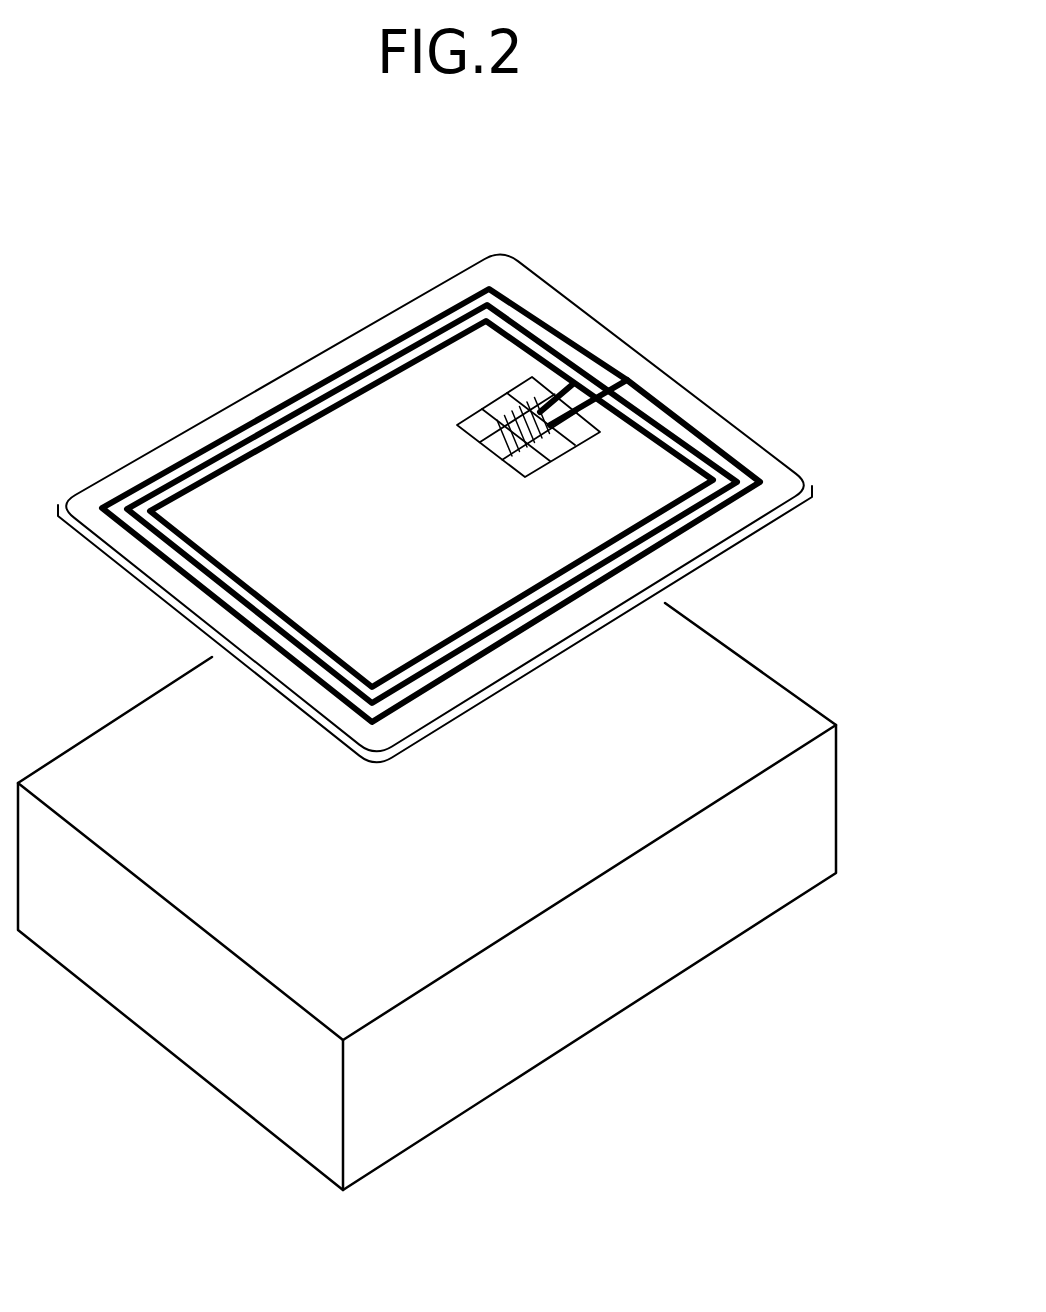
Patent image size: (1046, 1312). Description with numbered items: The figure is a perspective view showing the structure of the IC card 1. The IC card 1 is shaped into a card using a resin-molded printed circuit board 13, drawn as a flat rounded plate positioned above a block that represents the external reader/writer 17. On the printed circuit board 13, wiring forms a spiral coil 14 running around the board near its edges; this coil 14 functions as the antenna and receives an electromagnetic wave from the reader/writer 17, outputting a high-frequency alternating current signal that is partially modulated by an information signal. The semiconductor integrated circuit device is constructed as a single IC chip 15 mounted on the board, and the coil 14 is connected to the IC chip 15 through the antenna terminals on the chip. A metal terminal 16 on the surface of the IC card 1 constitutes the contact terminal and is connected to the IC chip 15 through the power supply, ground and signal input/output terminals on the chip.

The IC card 1 is at (725, 322).
The printed circuit board 13 is at (297, 358).
The spiral coil 14 is at (167, 468).
The IC chip 15 is at (517, 417).
The metal terminal 16 is at (534, 390).
The reader/writer 17 is at (800, 697).